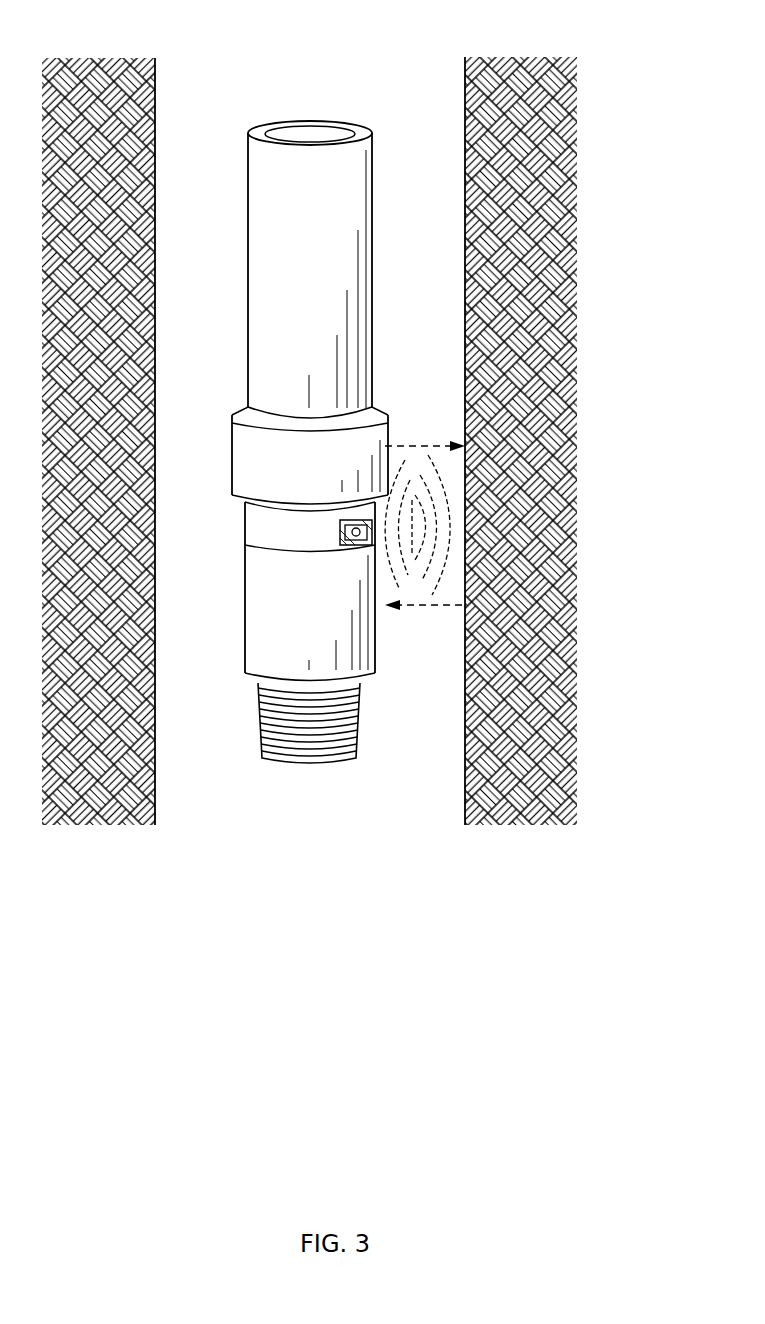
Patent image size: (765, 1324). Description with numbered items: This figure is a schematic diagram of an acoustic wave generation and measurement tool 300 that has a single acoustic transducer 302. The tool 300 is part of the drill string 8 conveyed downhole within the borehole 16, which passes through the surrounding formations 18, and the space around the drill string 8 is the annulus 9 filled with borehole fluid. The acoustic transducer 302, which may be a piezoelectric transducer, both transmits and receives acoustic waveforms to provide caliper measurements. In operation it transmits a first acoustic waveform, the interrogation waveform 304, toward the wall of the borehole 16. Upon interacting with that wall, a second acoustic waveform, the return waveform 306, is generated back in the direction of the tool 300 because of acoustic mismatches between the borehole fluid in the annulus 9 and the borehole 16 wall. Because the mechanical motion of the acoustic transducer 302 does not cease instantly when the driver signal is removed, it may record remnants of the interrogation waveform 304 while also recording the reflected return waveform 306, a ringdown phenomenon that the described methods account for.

The acoustic wave generation and measurement tool 300 is at (163, 40).
The drill string 8 is at (247, 175).
The annulus 9 is at (433, 253).
The borehole 16 is at (468, 147).
The formations 18 is at (572, 289).
The acoustic transducer 302 is at (355, 548).
The interrogation waveform 304 is at (407, 444).
The return waveform 306 is at (438, 608).